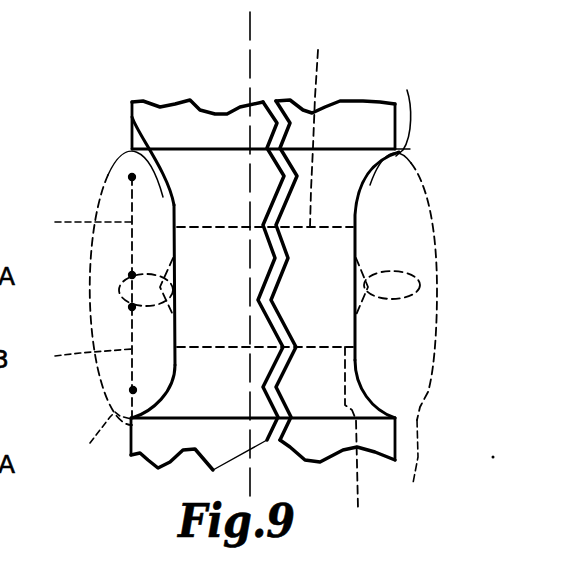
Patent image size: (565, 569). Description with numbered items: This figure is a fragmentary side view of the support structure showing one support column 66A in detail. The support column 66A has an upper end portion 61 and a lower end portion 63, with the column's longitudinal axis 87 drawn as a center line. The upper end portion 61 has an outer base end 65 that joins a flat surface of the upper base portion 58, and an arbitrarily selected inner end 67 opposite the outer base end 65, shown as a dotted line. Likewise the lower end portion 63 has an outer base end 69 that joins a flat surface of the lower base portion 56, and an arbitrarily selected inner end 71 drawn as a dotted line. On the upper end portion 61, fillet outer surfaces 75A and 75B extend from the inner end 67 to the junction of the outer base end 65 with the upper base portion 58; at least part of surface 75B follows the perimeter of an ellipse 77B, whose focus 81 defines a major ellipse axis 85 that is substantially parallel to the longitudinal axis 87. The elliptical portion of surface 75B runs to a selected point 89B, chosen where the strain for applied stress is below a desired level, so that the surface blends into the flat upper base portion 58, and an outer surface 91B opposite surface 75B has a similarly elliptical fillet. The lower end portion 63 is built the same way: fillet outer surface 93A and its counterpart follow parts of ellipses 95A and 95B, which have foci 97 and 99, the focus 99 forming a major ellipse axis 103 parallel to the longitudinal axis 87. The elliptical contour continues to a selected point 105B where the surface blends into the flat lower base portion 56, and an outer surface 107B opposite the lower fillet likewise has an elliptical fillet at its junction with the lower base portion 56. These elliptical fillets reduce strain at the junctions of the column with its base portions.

The lower base portion 56 is at (310, 455).
The upper base portion 58 is at (165, 105).
The upper end portion 61 is at (132, 177).
The lower end portion 63 is at (160, 391).
The outer base end 65 is at (205, 148).
The support column 66A is at (197, 425).
The inner end 67 is at (317, 124).
The outer base end 69 is at (160, 418).
The inner end 71 is at (356, 441).
The fillet outer surface 75A is at (232, 200).
The fillet outer surface 75B is at (173, 245).
The ellipse 77B is at (104, 186).
The focus 81 is at (130, 175).
The major ellipse axis 85 is at (77, 224).
The longitudinal axis 87 is at (252, 38).
The selected point 89B is at (131, 132).
The outer surface 91B is at (407, 90).
The fillet outer surface 93A is at (228, 397).
The ellipse 95A is at (15, 448).
The ellipse 95B is at (240, 464).
The focus 97 is at (10, 409).
The focus 99 is at (132, 307).
The major ellipse axis 103 is at (75, 359).
The selected point 105B is at (131, 455).
The outer surface 107B is at (360, 372).